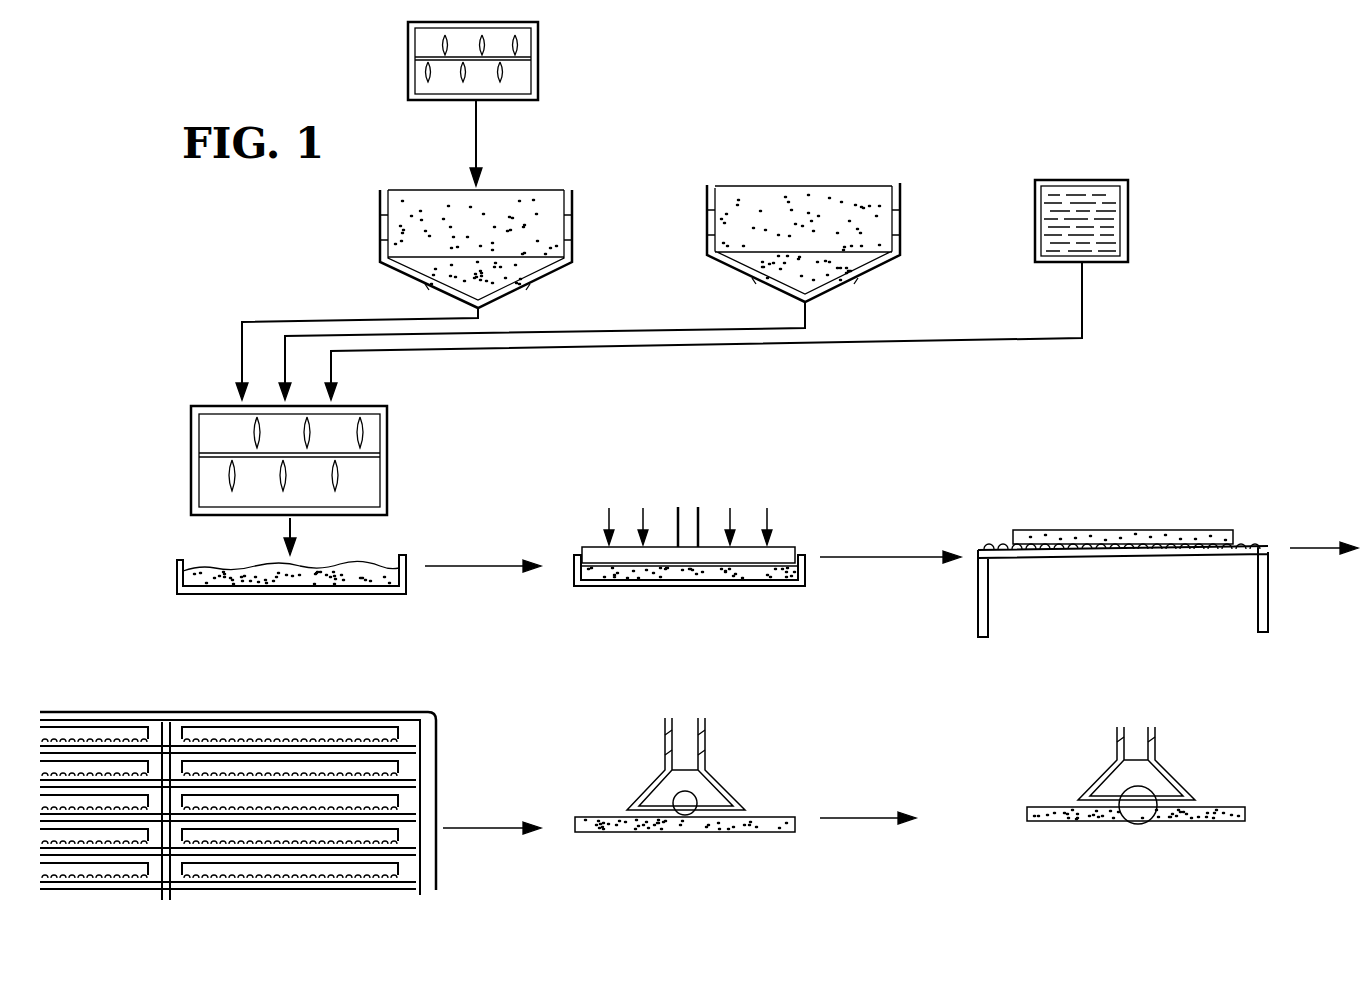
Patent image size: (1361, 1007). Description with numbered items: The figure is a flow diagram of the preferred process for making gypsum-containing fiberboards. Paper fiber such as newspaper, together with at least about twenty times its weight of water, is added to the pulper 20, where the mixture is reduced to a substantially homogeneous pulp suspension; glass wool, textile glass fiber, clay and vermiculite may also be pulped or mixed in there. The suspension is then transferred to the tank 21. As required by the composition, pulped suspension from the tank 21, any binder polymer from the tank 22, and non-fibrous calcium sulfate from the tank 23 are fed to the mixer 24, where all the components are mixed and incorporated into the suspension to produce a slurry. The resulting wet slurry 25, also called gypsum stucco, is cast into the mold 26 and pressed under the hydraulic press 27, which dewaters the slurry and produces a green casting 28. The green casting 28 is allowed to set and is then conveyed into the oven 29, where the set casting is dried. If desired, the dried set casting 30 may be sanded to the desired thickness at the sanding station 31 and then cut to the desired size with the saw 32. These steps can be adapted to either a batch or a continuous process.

The pulper 20 is at (540, 50).
The tank 21 is at (572, 215).
The tank 22 is at (900, 205).
The tank 23 is at (1128, 213).
The mixer 24 is at (390, 428).
The wet slurry 25 is at (360, 568).
The mold 26 is at (399, 594).
The hydraulic press 27 is at (783, 545).
The green casting 28 is at (750, 580).
The oven 29 is at (420, 712).
The dried set casting 30 is at (790, 817).
The sanding station 31 is at (688, 802).
The saw 32 is at (1140, 798).